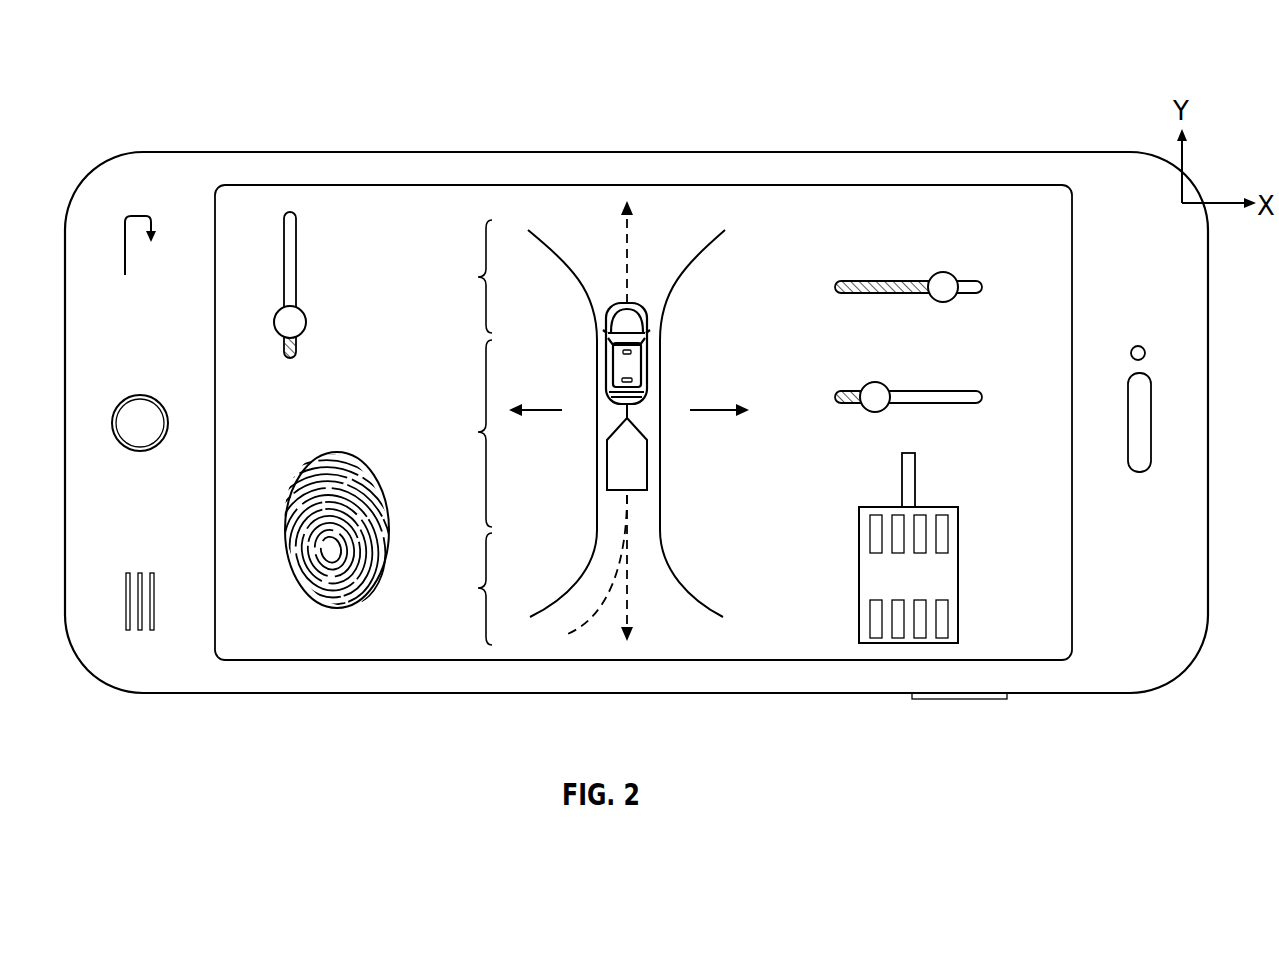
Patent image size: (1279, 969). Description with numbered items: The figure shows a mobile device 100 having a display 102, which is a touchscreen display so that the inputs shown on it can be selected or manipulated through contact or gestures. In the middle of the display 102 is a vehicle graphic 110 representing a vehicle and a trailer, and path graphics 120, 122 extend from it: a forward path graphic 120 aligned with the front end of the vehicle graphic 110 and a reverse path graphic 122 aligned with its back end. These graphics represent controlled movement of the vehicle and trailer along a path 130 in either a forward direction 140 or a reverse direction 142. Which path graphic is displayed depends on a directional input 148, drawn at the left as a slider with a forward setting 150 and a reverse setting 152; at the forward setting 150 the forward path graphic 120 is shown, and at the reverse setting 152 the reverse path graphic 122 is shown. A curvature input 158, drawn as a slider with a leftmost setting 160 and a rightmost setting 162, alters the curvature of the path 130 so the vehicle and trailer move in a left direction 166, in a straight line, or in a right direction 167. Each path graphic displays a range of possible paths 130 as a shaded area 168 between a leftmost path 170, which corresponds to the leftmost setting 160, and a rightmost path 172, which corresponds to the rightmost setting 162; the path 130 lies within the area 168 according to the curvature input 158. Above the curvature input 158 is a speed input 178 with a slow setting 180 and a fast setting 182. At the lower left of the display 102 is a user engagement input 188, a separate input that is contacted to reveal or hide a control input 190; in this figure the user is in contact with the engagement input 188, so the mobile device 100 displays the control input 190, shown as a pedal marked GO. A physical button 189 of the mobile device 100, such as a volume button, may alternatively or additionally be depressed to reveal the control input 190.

The mobile device 100 is at (1170, 63).
The display 102 is at (937, 186).
The vehicle graphic 110 is at (477, 432).
The forward path graphic 120 is at (477, 277).
The reverse path graphic 122 is at (477, 588).
The path 130 is at (597, 620).
The forward direction 140 is at (627, 230).
The reverse direction 142 is at (628, 605).
The directional input 148 is at (274, 289).
The forward setting 150 is at (330, 208).
The reverse setting 152 is at (335, 372).
The curvature input 158 is at (971, 434).
The leftmost setting 160 is at (836, 397).
The rightmost setting 162 is at (982, 397).
The left direction 166 is at (537, 410).
The right direction 167 is at (712, 410).
The shaded area 168 is at (690, 603).
The leftmost path 170 is at (592, 557).
The rightmost path 172 is at (667, 563).
The speed input 178 is at (1000, 293).
The slow setting 180 is at (783, 224).
The fast setting 182 is at (1007, 224).
The user engagement input 188 is at (308, 470).
The physical button 189 is at (955, 700).
The control input 190 is at (958, 575).